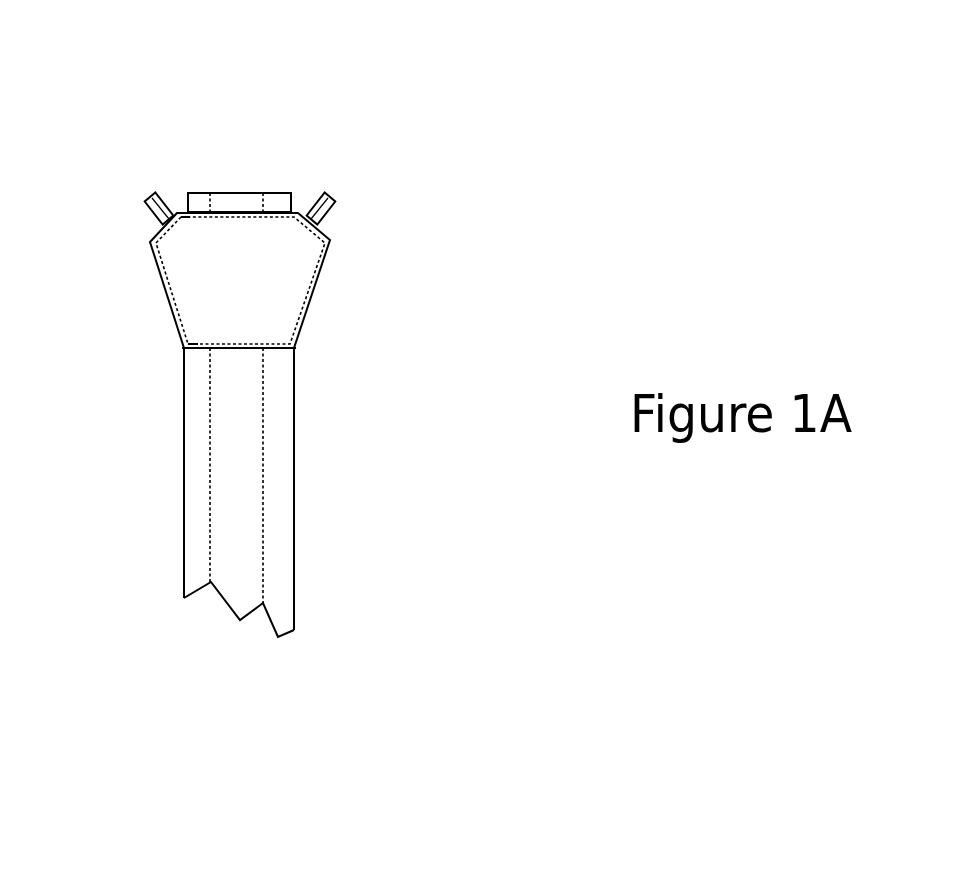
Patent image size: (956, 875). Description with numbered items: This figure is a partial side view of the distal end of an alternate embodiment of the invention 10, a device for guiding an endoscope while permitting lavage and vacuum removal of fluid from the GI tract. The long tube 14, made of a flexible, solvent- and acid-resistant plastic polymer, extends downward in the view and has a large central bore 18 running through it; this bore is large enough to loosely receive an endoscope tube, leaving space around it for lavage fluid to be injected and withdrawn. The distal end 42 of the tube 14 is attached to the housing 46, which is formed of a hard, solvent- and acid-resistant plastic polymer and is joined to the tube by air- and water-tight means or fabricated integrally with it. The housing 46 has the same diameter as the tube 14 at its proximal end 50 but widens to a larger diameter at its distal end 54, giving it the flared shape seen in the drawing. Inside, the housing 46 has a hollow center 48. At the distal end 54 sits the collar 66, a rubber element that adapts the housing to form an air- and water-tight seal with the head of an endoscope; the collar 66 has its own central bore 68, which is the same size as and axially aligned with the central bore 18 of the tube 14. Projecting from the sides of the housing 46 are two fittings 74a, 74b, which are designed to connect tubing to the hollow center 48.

The invention 10 is at (455, 600).
The tube 14 is at (273, 455).
The central bore 18 is at (233, 573).
The distal end 42 is at (283, 350).
The housing 46 is at (323, 259).
The hollow center 48 is at (262, 290).
The proximal end 50 is at (203, 348).
The distal end 54 is at (197, 217).
The collar 66 is at (280, 207).
The central bore 68 is at (236, 207).
The fitting 74a is at (147, 220).
The fitting 74b is at (331, 212).